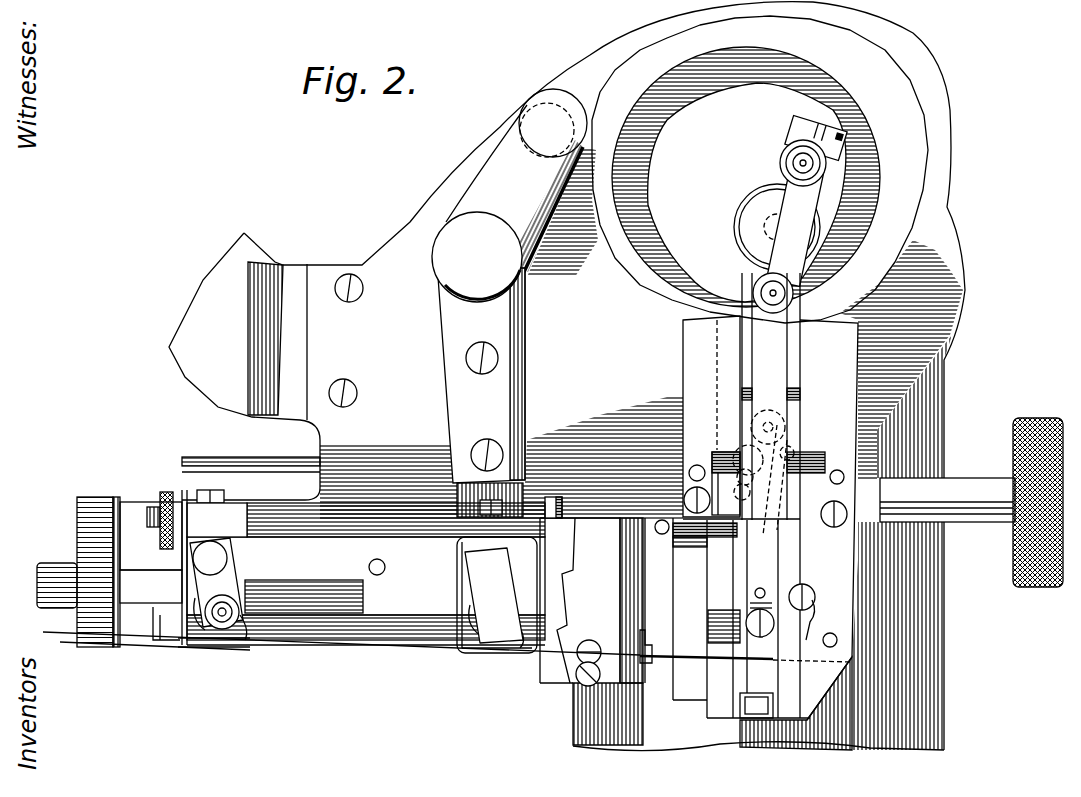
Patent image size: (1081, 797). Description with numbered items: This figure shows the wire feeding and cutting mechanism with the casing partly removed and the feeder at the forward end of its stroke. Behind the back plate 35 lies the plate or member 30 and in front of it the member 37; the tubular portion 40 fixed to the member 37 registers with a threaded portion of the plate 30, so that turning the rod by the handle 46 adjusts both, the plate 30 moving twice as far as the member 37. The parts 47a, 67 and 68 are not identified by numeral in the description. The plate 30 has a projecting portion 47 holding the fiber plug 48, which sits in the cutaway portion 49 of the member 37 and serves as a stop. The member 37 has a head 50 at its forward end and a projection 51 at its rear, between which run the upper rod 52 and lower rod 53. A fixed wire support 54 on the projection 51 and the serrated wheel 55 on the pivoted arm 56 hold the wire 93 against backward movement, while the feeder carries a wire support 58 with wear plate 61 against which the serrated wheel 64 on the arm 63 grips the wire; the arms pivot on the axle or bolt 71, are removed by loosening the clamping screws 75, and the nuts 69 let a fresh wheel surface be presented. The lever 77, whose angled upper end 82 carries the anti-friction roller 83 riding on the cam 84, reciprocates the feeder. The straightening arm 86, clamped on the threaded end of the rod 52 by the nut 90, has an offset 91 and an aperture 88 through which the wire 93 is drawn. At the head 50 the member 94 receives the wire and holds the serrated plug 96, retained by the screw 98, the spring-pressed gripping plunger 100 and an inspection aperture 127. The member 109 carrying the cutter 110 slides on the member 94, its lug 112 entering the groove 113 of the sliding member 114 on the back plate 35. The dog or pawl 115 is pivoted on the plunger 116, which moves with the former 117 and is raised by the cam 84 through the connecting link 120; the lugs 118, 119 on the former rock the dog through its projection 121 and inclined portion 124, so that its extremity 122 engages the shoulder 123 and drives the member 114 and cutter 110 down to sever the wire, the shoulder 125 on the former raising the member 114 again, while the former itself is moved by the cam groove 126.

The frame 35 is at (944, 112).
The bar 30 is at (140, 502).
The plate 37 is at (420, 642).
The body 40 is at (280, 472).
The knurled knob 46 is at (1040, 422).
The head 47 is at (88, 515).
The shaft 47a is at (976, 485).
The nut 48 is at (42, 566).
The slide plate 49 is at (323, 596).
The block 50 is at (565, 535).
The guide 51 is at (240, 508).
The rail 52 is at (436, 532).
The rail 53 is at (384, 636).
The bracket 54 is at (232, 649).
The bracket 55 is at (225, 640).
The rocker 56 is at (232, 580).
The bracket 58 is at (483, 656).
The plate 61 is at (512, 612).
The rocker 63 is at (480, 598).
The plate 64 is at (506, 660).
The spring 67 is at (200, 617).
The pivot screw 68 is at (220, 616).
The pawl 69 is at (246, 636).
The opening 71 is at (216, 560).
The screw 75 is at (495, 508).
The plate 77 is at (448, 328).
The arm 82 is at (487, 180).
The boss 83 is at (556, 92).
The ring 84 is at (913, 192).
The bar 86 is at (182, 552).
The spring 88 is at (165, 642).
The knurled nut 90 is at (168, 490).
The rod 91 is at (167, 652).
The rod 93 is at (61, 634).
The plate 94 is at (590, 562).
The plate 96 is at (590, 660).
The screw 98 is at (597, 678).
The screw 100 is at (595, 642).
The plate 109 is at (655, 608).
The bracket 110 is at (668, 650).
The pin 112 is at (658, 535).
The block 113 is at (710, 535).
The plate 114 is at (717, 380).
The pin 115 is at (793, 440).
The slide 116 is at (777, 377).
The plate 117 is at (785, 572).
The pin 118 is at (793, 453).
The block 119 is at (718, 458).
The disc 120 is at (790, 207).
The link 121 is at (700, 500).
The pin 122 is at (697, 465).
The screw 123 is at (690, 490).
The pin 124 is at (740, 435).
The screw 125 is at (762, 540).
The cam 126 is at (680, 247).
The pin 127 is at (583, 640).